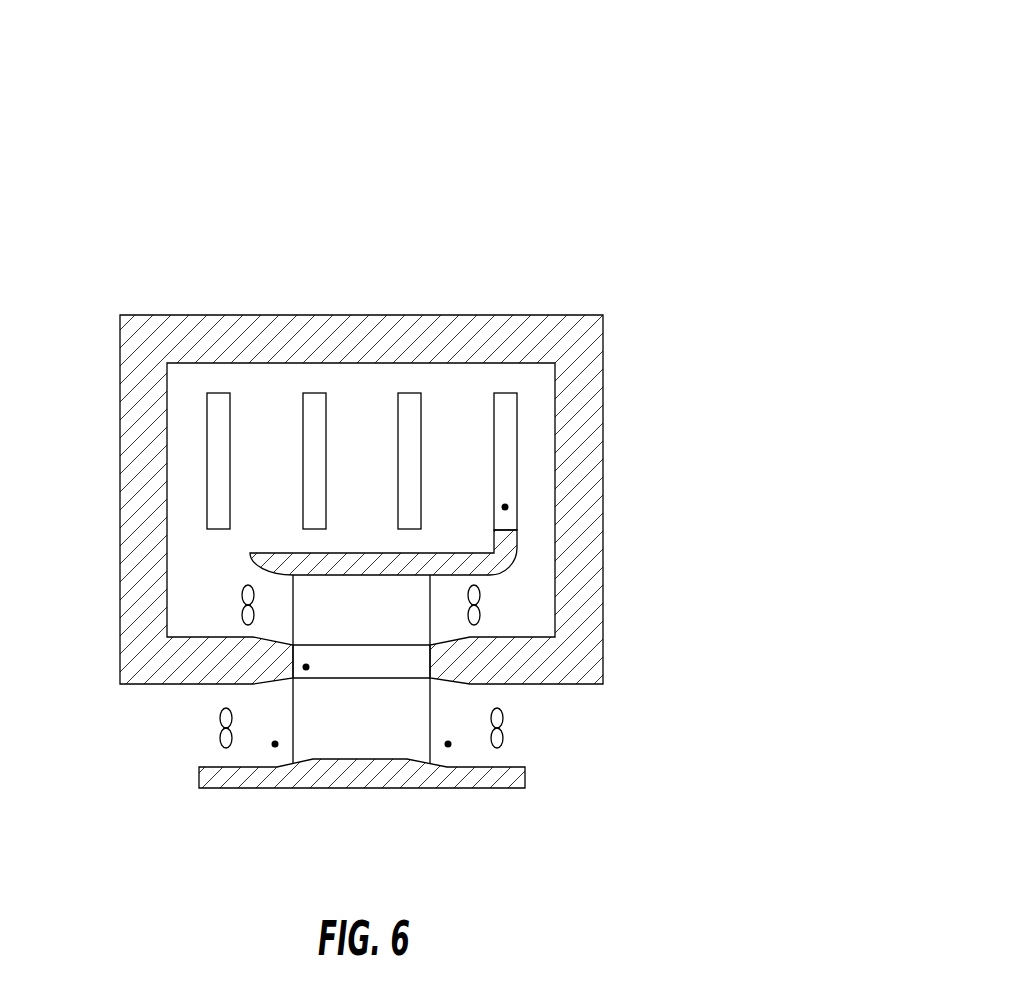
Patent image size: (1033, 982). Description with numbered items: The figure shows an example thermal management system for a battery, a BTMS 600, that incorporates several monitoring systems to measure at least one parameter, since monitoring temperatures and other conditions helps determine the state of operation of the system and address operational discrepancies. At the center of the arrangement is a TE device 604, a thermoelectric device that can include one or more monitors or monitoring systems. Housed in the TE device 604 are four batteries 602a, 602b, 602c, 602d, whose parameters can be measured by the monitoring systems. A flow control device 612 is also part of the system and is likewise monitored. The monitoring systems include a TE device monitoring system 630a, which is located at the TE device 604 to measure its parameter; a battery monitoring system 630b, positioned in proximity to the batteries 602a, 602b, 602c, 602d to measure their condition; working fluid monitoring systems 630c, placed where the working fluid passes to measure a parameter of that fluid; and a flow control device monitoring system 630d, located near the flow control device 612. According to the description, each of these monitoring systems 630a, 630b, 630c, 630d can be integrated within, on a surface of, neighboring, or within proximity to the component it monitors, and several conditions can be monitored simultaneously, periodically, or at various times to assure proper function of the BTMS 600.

The BTMS 600 is at (613, 147).
The battery 602a is at (217, 417).
The battery 602b is at (312, 417).
The battery 602c is at (407, 417).
The battery 602d is at (505, 417).
The TE device 604 is at (423, 662).
The flow control device 612 is at (507, 707).
The TE device monitoring system 630a is at (306, 667).
The battery monitoring system 630b is at (505, 507).
The working fluid monitoring system 630c is at (275, 744).
The flow control device monitoring system 630d is at (503, 728).